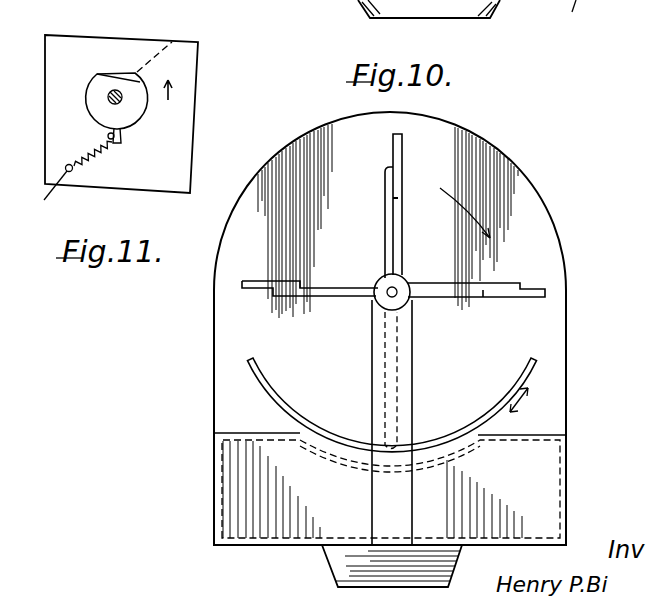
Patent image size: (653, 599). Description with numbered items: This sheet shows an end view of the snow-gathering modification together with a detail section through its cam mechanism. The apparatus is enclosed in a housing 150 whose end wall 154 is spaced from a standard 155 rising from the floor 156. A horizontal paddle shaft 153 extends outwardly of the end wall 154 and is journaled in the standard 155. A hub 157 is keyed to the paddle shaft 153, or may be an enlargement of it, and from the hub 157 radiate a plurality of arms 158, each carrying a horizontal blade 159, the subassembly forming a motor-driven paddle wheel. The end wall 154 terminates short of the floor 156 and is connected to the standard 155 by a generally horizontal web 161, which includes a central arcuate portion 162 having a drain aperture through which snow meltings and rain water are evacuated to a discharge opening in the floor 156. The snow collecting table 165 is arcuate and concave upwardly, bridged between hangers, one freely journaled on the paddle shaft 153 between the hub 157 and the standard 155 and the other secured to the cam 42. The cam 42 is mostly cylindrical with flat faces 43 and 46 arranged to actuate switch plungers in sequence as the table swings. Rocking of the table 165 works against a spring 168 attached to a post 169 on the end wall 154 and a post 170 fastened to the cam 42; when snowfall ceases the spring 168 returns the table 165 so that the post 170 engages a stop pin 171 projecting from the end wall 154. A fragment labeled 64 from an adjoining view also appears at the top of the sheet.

In FIG. 10, the housing 150 is at (508, 160).
In FIG. 10, the paddle shaft 153 is at (398, 287).
In FIG. 10, the standard 155 is at (412, 338).
In FIG. 10, the floor 156 is at (592, 13).
In FIG. 10, the hub 157 is at (378, 278).
In FIG. 10, the arms 158 is at (386, 214).
In FIG. 10, the blade 159 is at (402, 160).
In FIG. 10, the web 161 is at (548, 437).
In FIG. 10, the arcuate portion 162 is at (447, 456).
In FIG. 10, the snow collecting table 165 is at (537, 373).
In FIG. 10, the base fragment 64 is at (429, 9).
In FIG. 11, the end wall 154 is at (190, 112).
In FIG. 11, the cam 42 is at (143, 121).
In FIG. 11, the face 43 is at (112, 72).
In FIG. 11, the face 46 is at (169, 52).
In FIG. 11, the spring 168 is at (106, 161).
In FIG. 11, the post 169 is at (40, 198).
In FIG. 11, the post 170 is at (121, 142).
In FIG. 11, the stop pin 171 is at (108, 136).